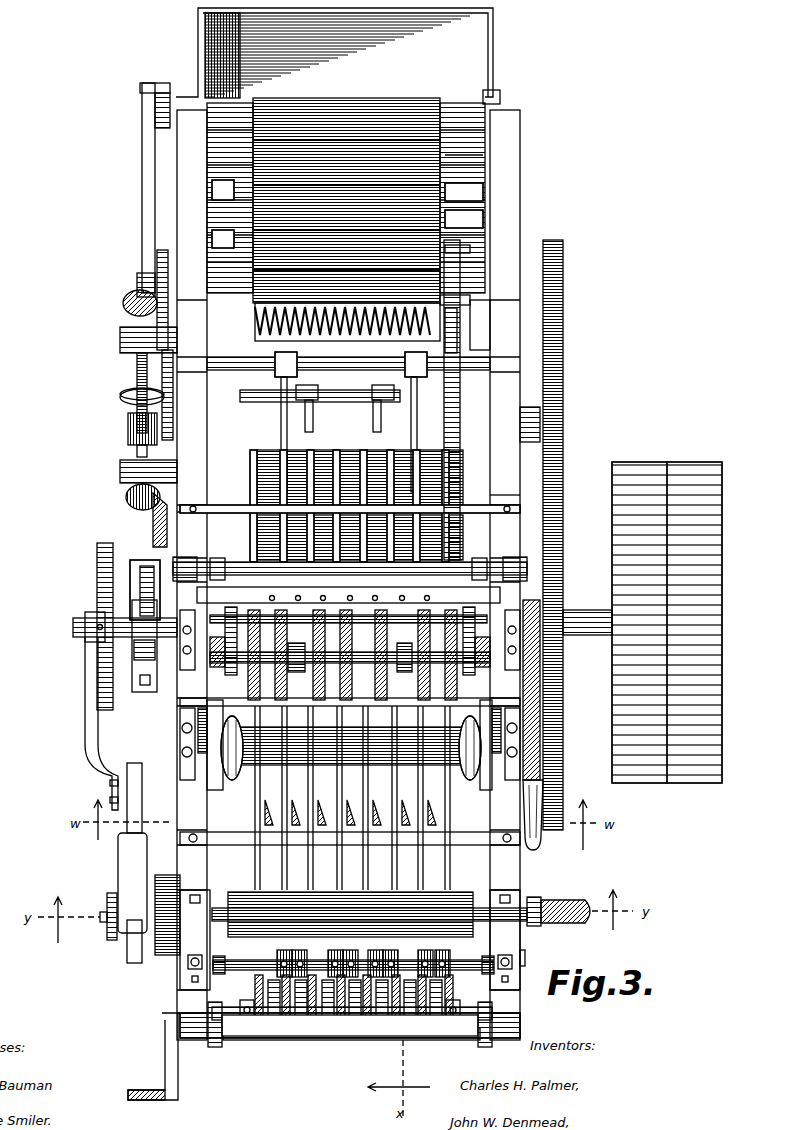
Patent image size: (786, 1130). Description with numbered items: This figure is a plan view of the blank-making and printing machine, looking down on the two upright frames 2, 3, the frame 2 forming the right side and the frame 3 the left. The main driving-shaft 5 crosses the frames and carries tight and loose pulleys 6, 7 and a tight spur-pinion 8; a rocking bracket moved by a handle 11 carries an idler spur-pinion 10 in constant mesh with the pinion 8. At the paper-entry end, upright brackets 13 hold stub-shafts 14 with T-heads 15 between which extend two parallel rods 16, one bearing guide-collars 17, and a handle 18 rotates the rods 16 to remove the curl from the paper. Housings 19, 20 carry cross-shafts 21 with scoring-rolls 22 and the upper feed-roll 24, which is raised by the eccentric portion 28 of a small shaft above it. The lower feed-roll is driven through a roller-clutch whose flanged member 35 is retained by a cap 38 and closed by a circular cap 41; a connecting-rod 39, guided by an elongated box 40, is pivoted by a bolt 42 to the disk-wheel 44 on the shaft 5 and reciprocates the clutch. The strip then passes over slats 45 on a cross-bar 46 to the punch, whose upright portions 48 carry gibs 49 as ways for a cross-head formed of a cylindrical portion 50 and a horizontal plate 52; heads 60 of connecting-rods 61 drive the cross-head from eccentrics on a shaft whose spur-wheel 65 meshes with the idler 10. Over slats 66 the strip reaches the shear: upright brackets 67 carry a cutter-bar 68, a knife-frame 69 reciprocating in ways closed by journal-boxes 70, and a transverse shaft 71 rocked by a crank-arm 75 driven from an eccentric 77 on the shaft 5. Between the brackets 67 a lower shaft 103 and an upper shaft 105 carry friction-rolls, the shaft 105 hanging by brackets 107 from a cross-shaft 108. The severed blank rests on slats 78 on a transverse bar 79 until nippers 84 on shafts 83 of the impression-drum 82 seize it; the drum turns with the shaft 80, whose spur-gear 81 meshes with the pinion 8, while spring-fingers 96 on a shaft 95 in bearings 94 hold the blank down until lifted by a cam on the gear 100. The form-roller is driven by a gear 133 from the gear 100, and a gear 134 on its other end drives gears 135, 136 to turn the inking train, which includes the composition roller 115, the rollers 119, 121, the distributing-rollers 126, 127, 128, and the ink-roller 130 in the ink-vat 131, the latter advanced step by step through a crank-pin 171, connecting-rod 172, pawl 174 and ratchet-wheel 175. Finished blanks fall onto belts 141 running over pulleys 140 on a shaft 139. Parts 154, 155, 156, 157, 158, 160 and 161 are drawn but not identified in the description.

The upright frame 2 is at (505, 575).
The upright frame 3 is at (192, 575).
The main driving-shaft 5 is at (587, 615).
The tight pulley 6 is at (638, 462).
The loose pulley 7 is at (688, 462).
The tight spur-pinion 8 is at (563, 645).
The idler spur-pinion 10 is at (563, 684).
The handle 11 is at (543, 845).
The upright brackets 13 is at (350, 1016).
The stub-shafts 14 is at (180, 1040).
The T-heads 15 is at (485, 1045).
The parallel rods 16 is at (234, 1040).
The guide-collars 17 is at (351, 1044).
The handle 18 is at (153, 1056).
The housing 19 is at (507, 940).
The housing 20 is at (195, 940).
The cross-shafts 21 is at (232, 960).
The scoring-rolls 22 is at (458, 956).
The upper feed-roll 24 is at (238, 892).
The enlarged eccentric portion 28 is at (455, 910).
The flanged member of the clutch 35 is at (165, 955).
The cap 38 is at (107, 900).
The connecting-rod 39 is at (142, 793).
The elongated box 40 is at (118, 860).
The circular cap 41 is at (172, 875).
The bolt 42 is at (73, 630).
The disk-wheel 44 is at (97, 562).
The slats 45 is at (250, 861).
The cross-bar 46 is at (350, 830).
The upright portions 48 is at (180, 705).
The gibs 49 is at (495, 692).
The horizontal cylindrical portion 50 is at (376, 727).
The horizontal plate 52 is at (351, 742).
The heads 60 is at (470, 800).
The connecting-rods 61 is at (490, 590).
The spur-wheel 65 is at (563, 758).
The slats 66 is at (390, 684).
The upright brackets 67 is at (190, 640).
The cutter-bar 68 is at (563, 594).
The knife-frame 69 is at (563, 574).
The journal-boxes 70 is at (190, 560).
The transverse shaft 71 is at (232, 562).
The crank-arm 75 is at (315, 590).
The eccentric 77 is at (158, 660).
The slats 78 is at (350, 506).
The transverse bar 79 is at (490, 506).
The shaft 80 is at (492, 400).
The spur-gear 81 is at (563, 250).
The impression-drum 82 is at (388, 424).
The shafts 83 is at (340, 390).
The nippers 84 is at (345, 408).
The bearings 94 is at (500, 350).
The shaft 95 is at (215, 357).
The spring-fingers 96 is at (358, 422).
The gear 100 is at (458, 345).
The shaft 103 is at (215, 688).
The shaft 105 is at (350, 655).
The brackets 107 is at (220, 672).
The cross-shaft 108 is at (348, 628).
The composition roller 115 is at (470, 248).
The roller 119 is at (464, 219).
The roller 121 is at (464, 191).
The distributing-roller 126 is at (470, 160).
The distributing-roller 127 is at (485, 103).
The distributing-roller 128 is at (445, 118).
The ink-roller 130 is at (430, 88).
The ink-vat 131 is at (334, 53).
The gear 133 is at (463, 301).
The gear 134 is at (230, 300).
The gear 135 is at (212, 240).
The gear 136 is at (235, 190).
The shaft 139 is at (466, 1000).
The pulleys 140 is at (335, 1000).
The belts 141 is at (248, 1000).
The bracket 154 is at (120, 330).
The screw 155 is at (137, 372).
The knob 156 is at (128, 424).
The cam 157 is at (123, 304).
The ring 158 is at (120, 400).
The cam 160 is at (127, 497).
The wedge 161 is at (153, 525).
The crank-pin 171 is at (137, 285).
The connecting-rod 172 is at (142, 168).
The pawl 174 is at (165, 83).
The ratchet-wheel 175 is at (155, 128).